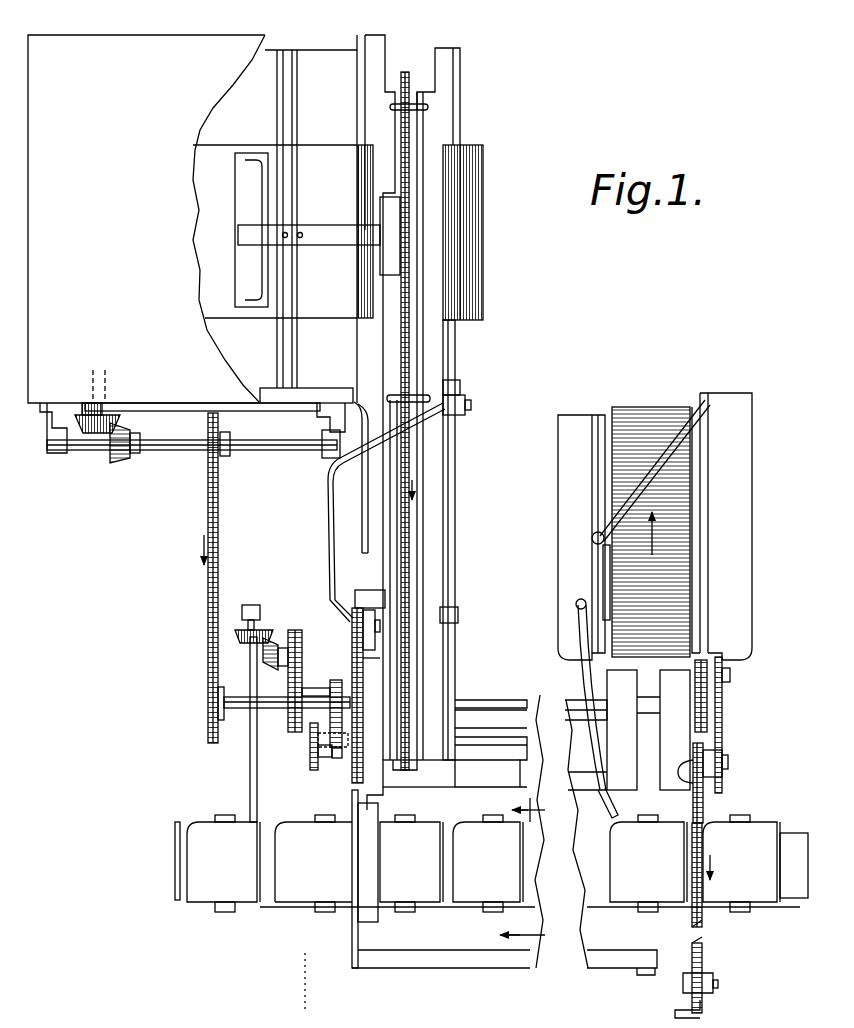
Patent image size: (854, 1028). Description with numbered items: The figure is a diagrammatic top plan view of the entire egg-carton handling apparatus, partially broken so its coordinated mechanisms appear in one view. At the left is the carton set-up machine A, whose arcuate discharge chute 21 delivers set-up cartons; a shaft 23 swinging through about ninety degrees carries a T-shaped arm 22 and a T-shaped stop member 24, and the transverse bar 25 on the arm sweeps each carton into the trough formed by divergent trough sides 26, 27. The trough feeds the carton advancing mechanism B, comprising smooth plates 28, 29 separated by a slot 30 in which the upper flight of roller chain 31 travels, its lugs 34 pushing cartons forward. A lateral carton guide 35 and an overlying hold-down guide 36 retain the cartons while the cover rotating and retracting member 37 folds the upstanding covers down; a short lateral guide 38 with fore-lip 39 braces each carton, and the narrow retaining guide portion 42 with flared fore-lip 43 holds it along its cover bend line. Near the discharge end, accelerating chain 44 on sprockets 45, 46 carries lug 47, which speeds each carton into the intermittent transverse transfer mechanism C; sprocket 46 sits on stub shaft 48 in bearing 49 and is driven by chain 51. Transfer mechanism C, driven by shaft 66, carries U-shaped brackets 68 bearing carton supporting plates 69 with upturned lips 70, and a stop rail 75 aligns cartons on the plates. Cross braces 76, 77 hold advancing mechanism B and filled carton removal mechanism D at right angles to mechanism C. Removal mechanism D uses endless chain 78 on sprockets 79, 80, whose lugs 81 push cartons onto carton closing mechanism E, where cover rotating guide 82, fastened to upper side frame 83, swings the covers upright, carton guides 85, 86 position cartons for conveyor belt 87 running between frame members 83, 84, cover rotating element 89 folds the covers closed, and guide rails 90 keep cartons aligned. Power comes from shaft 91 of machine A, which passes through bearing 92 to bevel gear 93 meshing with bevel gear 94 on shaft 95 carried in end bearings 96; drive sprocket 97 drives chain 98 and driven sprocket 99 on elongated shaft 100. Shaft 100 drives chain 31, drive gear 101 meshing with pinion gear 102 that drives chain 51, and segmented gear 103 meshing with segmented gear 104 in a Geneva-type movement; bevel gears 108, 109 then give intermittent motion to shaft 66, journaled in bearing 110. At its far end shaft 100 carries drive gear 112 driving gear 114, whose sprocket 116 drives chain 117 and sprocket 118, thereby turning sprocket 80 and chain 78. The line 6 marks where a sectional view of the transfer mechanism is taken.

The carton set-up machine A is at (196, 52).
The carton advancing mechanism B is at (470, 378).
The carton transfer mechanism C is at (460, 972).
The filled carton removal mechanism D is at (750, 790).
The carton closing mechanism E is at (758, 528).
The discharge chute 21 is at (326, 325).
The T-shaped arm 22 is at (245, 235).
The shaft 23 is at (293, 118).
The T-shaped stop member 24 is at (390, 258).
The transverse bar 25 is at (260, 180).
The trough side 26 is at (360, 165).
The trough side 27 is at (470, 160).
The plate 28 is at (378, 75).
The plate 29 is at (450, 75).
The slot 30 is at (412, 135).
The roller chain 31 is at (425, 620).
The carton advancing lug 34 is at (428, 107).
The lateral carton guide 35 is at (457, 448).
The guide 36 is at (455, 472).
The carton cover rotating and retracting member 37 is at (330, 548).
The short lateral guide 38 is at (362, 490).
The fore-lip 39 is at (330, 425).
The carton retaining guide portion 42 is at (365, 900).
The fore-lip 43 is at (372, 805).
The roller chain 44 is at (365, 658).
The sprocket 45 is at (375, 640).
The sprocket 46 is at (365, 745).
The lug 47 is at (380, 598).
The stub shaft 48 is at (320, 758).
The bearing 49 is at (337, 760).
The drive chain 51 is at (312, 770).
The driven shaft 66 is at (250, 785).
The U-shaped bracket 68 is at (215, 815).
The carton supporting plate 69 is at (497, 864).
The upturned lip 70 is at (258, 848).
The stop rail 75 is at (385, 965).
The cross brace 76 is at (485, 778).
The cross brace 77 is at (505, 740).
The endless chain 78 is at (702, 812).
The sprocket 79 is at (708, 1000).
The sprocket 80 is at (706, 758).
The lug 81 is at (675, 1014).
The cover rotating guide 82 is at (582, 680).
The upper side frame 83 is at (560, 538).
The frame member 84 is at (738, 452).
The carton guide 85 is at (618, 792).
The carton guide 86 is at (680, 695).
The endless conveyor belt 87 is at (755, 600).
The cover rotating element 89 is at (665, 450).
The guide rail 90 is at (598, 418).
The shaft 91 is at (108, 385).
The bearing 92 is at (104, 408).
The bevel gear 93 is at (80, 418).
The bevel gear 94 is at (127, 466).
The shaft 95 is at (180, 452).
The end bearing 96 is at (62, 455).
The drive sprocket 97 is at (226, 458).
The chain 98 is at (218, 570).
The driven sprocket 99 is at (222, 722).
The drive shaft 100 is at (272, 712).
The drive gear 101 is at (300, 688).
The pinion gear 102 is at (330, 750).
The segmented drive gear 103 is at (300, 690).
The segmented gear 104 is at (302, 660).
The bevel gear 108 is at (262, 655).
The bevel gear 109 is at (268, 636).
The bearing 110 is at (258, 612).
The drive gear 112 is at (706, 718).
The driven gear 114 is at (680, 670).
The sprocket 116 is at (722, 672).
The endless chain 117 is at (708, 700).
The sprocket 118 is at (728, 775).
The section line 6 is at (544, 831).